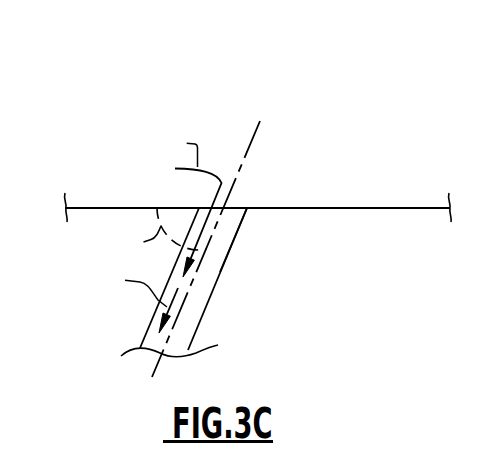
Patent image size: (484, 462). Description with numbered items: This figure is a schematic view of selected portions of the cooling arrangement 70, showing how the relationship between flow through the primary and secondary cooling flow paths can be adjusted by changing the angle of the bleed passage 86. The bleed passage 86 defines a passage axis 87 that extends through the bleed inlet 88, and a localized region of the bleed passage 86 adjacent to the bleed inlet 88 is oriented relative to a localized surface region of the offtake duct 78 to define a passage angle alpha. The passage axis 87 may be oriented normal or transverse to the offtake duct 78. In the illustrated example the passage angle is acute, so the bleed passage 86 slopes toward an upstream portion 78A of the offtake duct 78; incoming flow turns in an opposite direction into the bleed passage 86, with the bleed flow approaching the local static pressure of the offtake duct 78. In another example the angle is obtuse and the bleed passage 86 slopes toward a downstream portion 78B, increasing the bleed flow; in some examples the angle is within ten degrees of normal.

The joint/assembly 70 is at (140, 77).
The offtake duct 78 is at (240, 191).
The upstream portion 78A is at (118, 208).
The downstream portion 78B is at (343, 208).
The bleed passage 86 is at (199, 323).
The passage axis 87 is at (249, 148).
The bleed inlet 88 is at (247, 208).